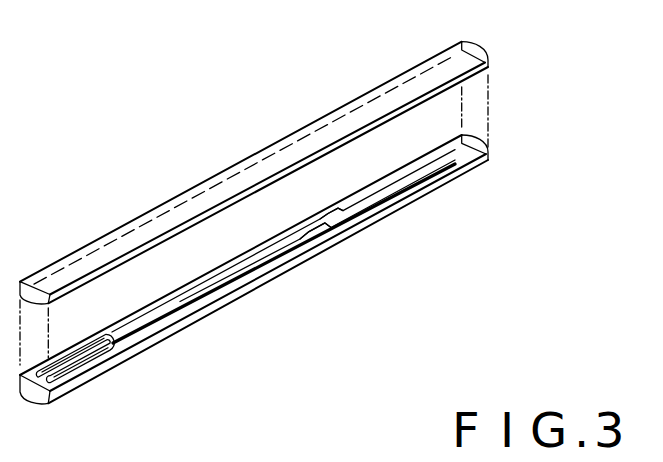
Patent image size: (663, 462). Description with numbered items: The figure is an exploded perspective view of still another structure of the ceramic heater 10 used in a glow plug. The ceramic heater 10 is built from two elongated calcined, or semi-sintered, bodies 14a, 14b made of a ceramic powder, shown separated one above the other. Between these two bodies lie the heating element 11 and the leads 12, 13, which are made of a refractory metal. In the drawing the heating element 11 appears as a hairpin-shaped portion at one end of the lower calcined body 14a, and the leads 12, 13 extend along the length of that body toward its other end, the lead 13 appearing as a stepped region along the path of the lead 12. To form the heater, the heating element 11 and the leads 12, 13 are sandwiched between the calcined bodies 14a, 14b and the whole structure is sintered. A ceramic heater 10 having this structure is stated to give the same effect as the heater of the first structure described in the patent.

The ceramic heater 10 is at (140, 190).
The heating element 11 is at (97, 356).
The lead 12 is at (237, 281).
The lead 13 is at (294, 224).
The calcined body 14a is at (433, 191).
The calcined body 14b is at (377, 105).